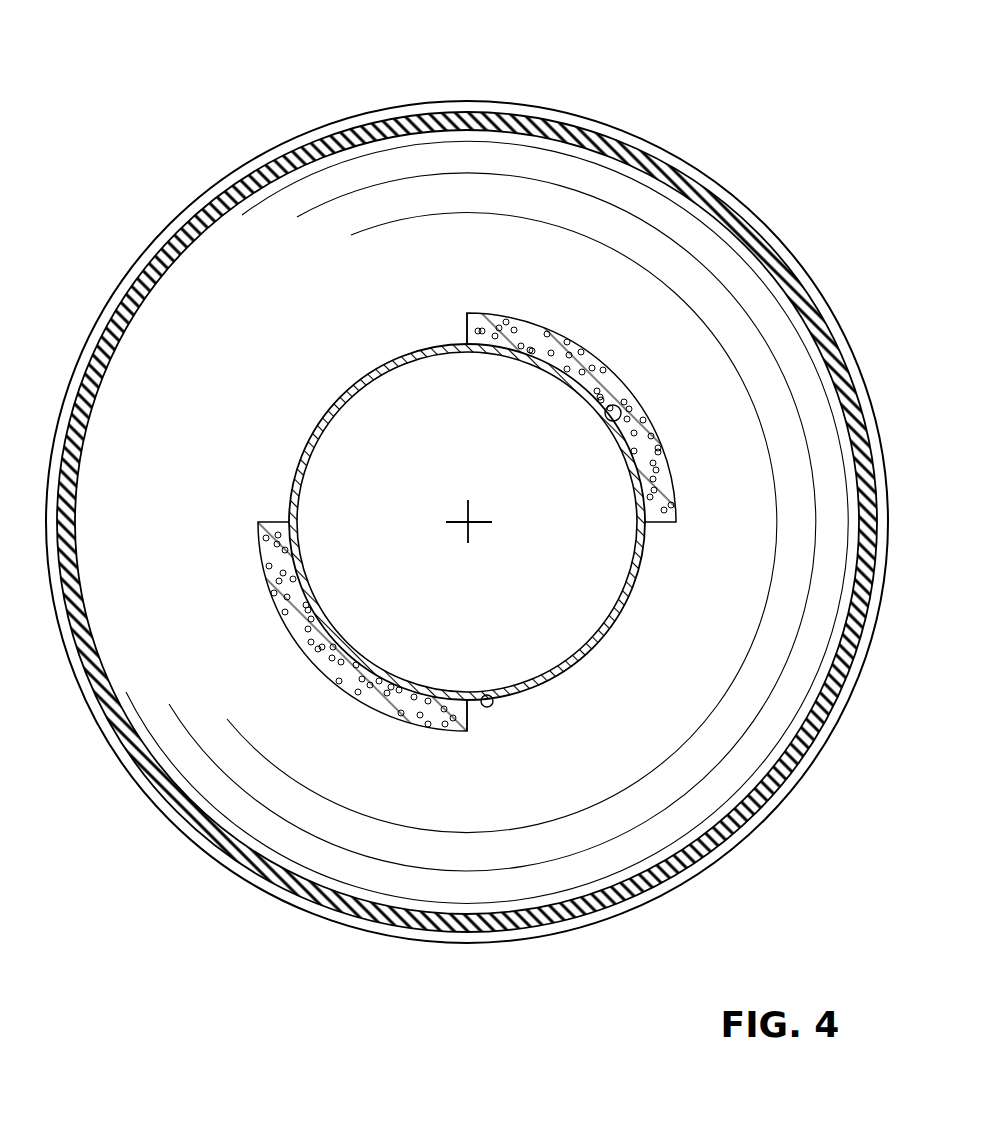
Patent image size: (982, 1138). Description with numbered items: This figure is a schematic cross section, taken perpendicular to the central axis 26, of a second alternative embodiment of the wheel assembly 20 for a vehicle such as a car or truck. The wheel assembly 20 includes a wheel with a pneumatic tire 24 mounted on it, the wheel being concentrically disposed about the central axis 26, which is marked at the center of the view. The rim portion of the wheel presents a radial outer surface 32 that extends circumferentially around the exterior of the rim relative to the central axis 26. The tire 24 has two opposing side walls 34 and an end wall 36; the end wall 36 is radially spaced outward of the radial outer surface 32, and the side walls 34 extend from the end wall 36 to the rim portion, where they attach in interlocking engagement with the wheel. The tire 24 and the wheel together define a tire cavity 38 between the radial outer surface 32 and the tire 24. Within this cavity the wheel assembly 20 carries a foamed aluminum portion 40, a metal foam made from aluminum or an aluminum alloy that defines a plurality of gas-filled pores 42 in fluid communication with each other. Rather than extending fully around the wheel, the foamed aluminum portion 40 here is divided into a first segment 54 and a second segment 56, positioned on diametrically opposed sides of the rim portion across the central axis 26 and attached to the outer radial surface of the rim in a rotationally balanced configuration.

The wheel assembly 20 is at (652, 82).
The pneumatic tire 24 is at (497, 97).
The central axis 26 is at (470, 525).
The radial outer surface 32 is at (616, 424).
The side walls 34 is at (218, 337).
The end wall 36 is at (297, 143).
The tire cavity 38 is at (362, 287).
The foamed aluminum portion 40 is at (593, 370).
The pores 42 is at (653, 434).
The first segment 54 is at (540, 330).
The second segment 56 is at (437, 727).